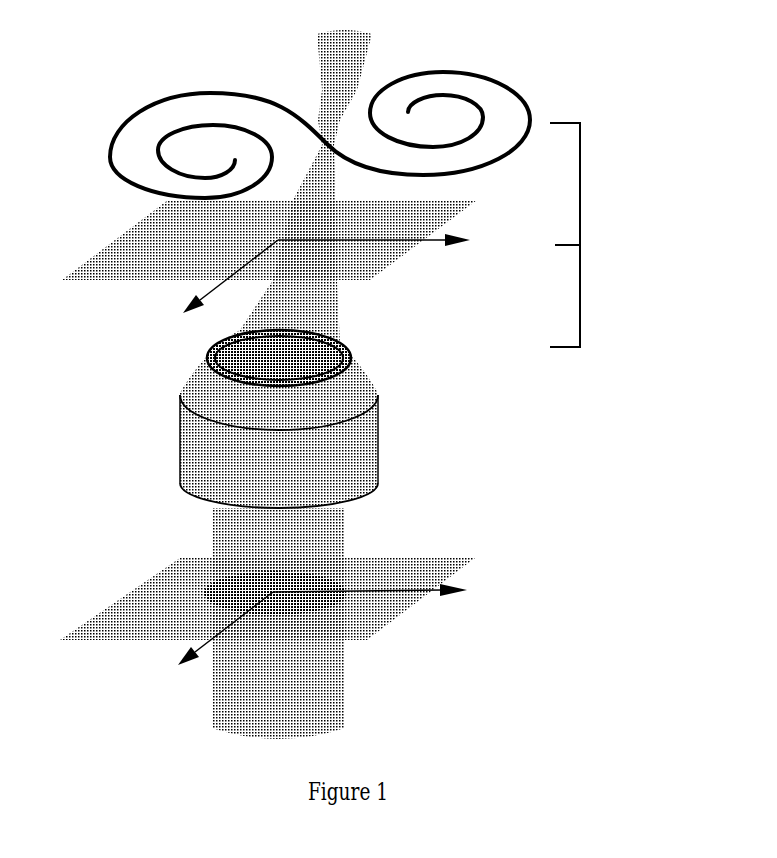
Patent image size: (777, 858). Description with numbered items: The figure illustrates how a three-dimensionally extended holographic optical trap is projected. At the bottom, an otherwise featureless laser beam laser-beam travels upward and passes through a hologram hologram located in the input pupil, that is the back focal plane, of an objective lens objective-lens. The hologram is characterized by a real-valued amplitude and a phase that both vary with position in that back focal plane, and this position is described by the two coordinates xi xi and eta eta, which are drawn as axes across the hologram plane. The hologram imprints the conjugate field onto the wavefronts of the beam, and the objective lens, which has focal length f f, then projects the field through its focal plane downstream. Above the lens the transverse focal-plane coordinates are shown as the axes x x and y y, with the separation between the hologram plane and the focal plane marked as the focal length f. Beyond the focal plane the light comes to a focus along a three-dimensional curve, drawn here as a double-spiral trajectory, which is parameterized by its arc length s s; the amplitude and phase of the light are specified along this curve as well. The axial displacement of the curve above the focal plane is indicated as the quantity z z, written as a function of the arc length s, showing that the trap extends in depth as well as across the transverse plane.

The arc length s is at (267, 78).
The x coordinate x is at (217, 299).
The y coordinate y is at (390, 246).
The axial coordinate z(s) z is at (601, 235).
The focal length f is at (608, 309).
The eta coordinate eta is at (386, 595).
The xi coordinate xi is at (212, 651).
The objective lens objective-lens is at (408, 419).
The element hologram is at (332, 574).
The laser beam laser-beam is at (387, 384).